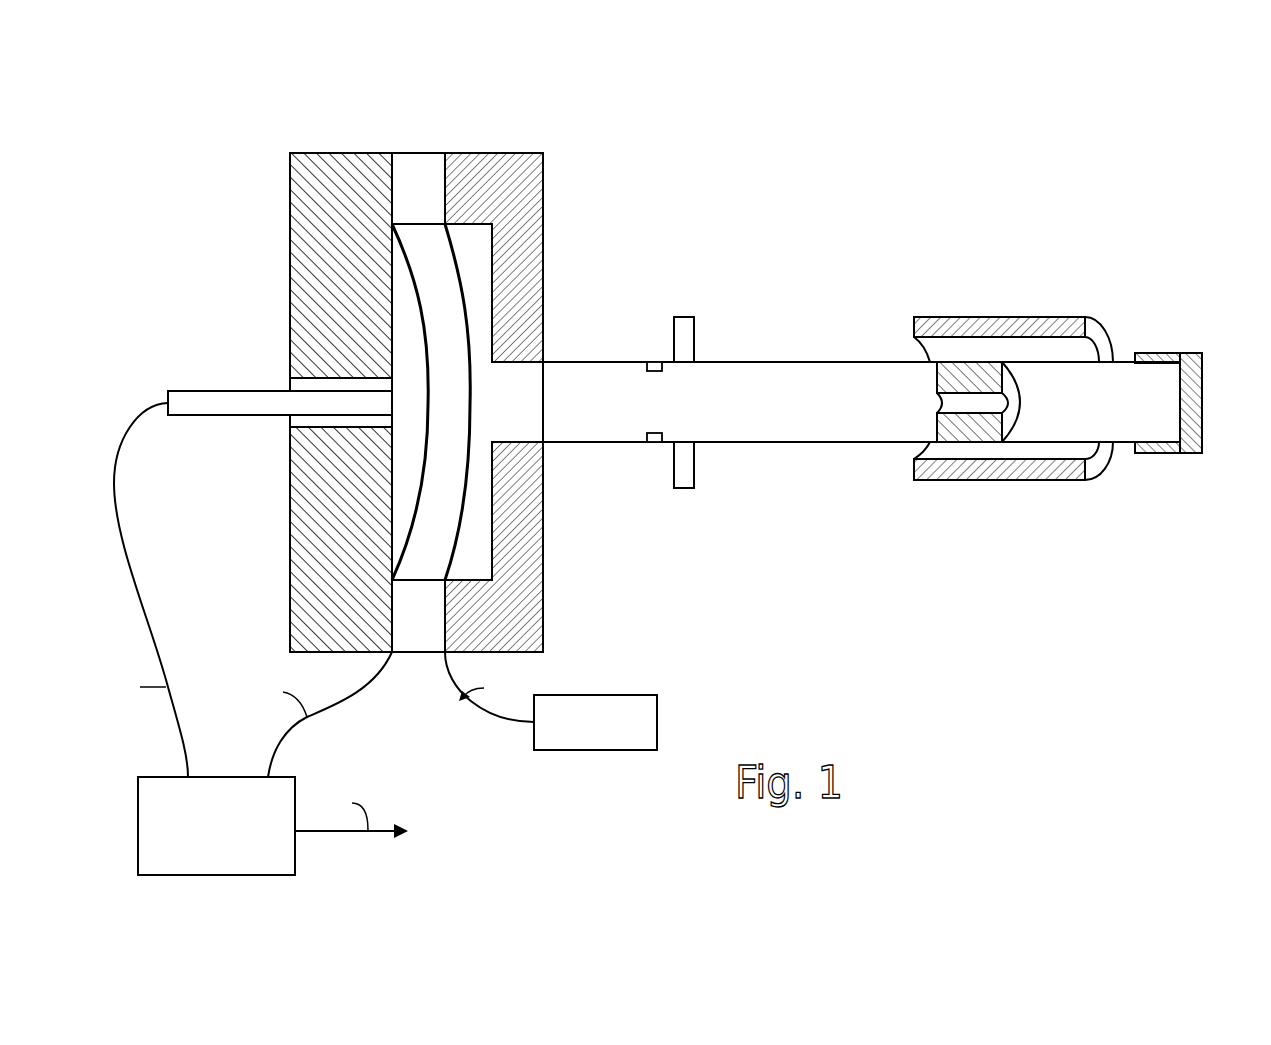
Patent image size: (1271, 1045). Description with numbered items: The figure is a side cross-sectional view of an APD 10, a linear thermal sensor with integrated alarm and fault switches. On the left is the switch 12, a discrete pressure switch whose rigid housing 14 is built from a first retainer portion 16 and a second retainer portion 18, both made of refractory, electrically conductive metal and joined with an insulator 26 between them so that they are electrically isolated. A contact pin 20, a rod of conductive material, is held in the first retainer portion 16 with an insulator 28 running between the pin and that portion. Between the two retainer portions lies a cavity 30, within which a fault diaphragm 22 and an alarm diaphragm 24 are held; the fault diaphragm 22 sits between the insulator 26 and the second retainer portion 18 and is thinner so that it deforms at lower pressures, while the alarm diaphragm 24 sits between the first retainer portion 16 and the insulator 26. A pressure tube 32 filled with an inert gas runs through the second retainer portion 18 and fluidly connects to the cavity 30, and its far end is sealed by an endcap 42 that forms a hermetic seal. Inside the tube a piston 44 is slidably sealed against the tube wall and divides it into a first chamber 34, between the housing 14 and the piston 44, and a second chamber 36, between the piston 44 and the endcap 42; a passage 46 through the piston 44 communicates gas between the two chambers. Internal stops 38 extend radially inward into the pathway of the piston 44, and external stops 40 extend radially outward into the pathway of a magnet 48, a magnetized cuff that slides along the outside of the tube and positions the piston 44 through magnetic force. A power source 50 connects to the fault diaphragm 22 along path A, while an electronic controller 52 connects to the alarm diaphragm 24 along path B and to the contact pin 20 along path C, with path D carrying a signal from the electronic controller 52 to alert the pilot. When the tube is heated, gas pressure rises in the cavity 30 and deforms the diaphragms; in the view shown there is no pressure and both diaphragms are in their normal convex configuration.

The APD 10 is at (790, 237).
The switch 12 is at (283, 232).
The housing 14 is at (290, 527).
The first retainer portion 16 is at (330, 192).
The second retainer portion 18 is at (500, 185).
The contact pin 20 is at (215, 402).
The fault diaphragm 22 is at (470, 278).
The alarm diaphragm 24 is at (427, 497).
The insulator 26 is at (422, 178).
The insulator 28 is at (290, 422).
The cavity 30 is at (470, 248).
The pressure tube 32 is at (793, 362).
The first chamber 34 is at (743, 413).
The second chamber 36 is at (1106, 413).
The internal stops 38 is at (655, 372).
The external stops 40 is at (686, 317).
The endcap 42 is at (1205, 393).
The piston 44 is at (1020, 406).
The passage 46 is at (950, 388).
The magnet 48 is at (1010, 317).
The power source 50 is at (647, 708).
The electronic controller 52 is at (155, 777).